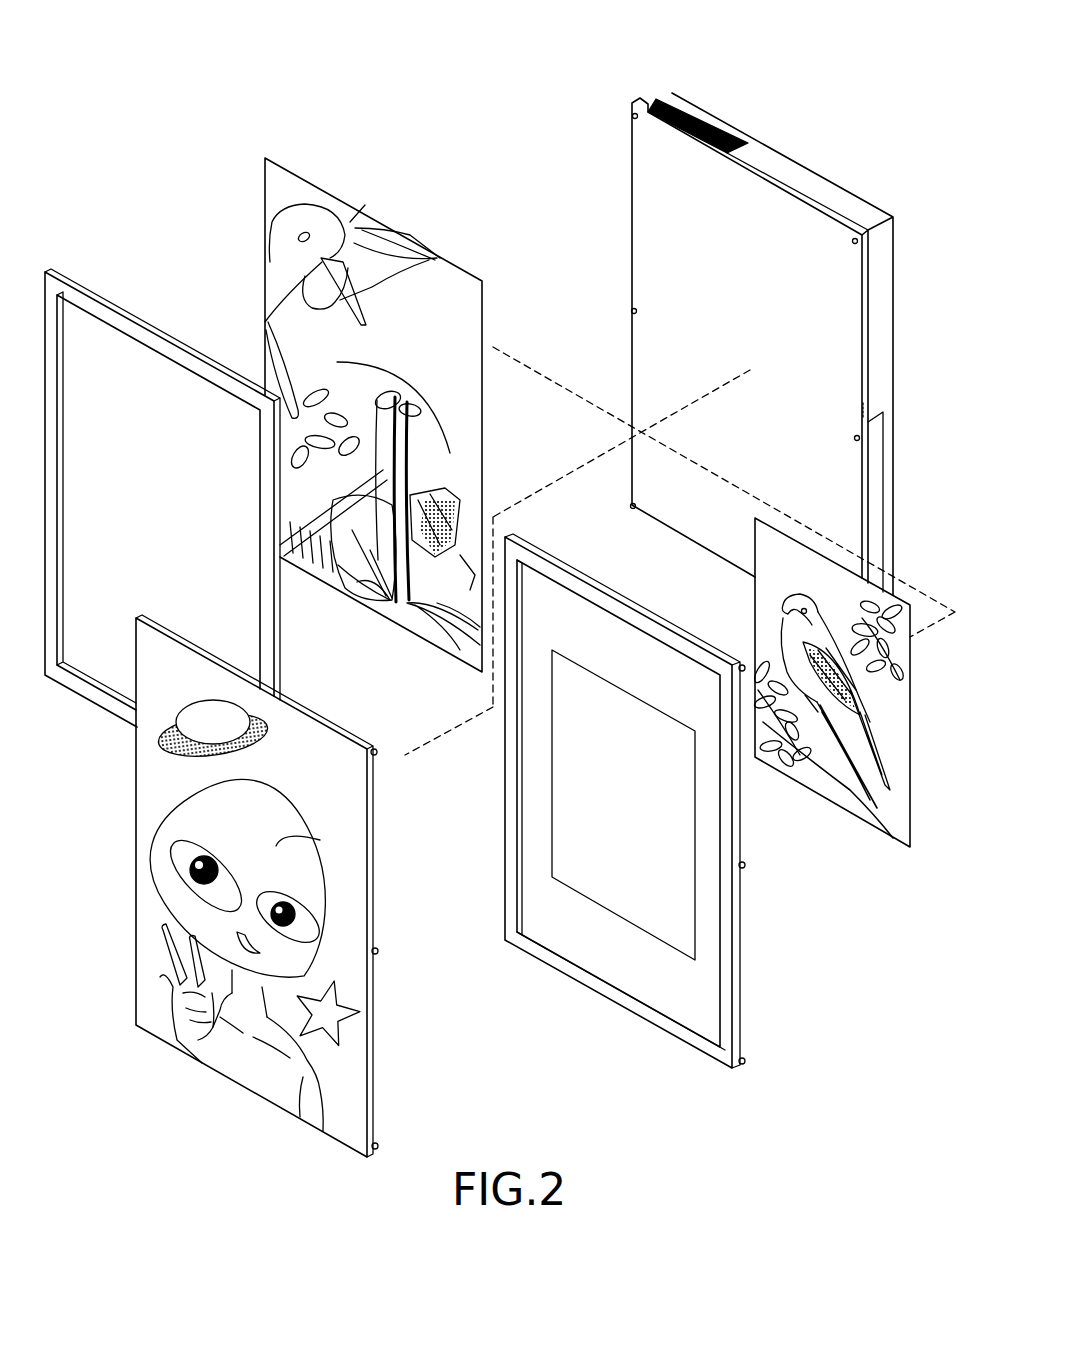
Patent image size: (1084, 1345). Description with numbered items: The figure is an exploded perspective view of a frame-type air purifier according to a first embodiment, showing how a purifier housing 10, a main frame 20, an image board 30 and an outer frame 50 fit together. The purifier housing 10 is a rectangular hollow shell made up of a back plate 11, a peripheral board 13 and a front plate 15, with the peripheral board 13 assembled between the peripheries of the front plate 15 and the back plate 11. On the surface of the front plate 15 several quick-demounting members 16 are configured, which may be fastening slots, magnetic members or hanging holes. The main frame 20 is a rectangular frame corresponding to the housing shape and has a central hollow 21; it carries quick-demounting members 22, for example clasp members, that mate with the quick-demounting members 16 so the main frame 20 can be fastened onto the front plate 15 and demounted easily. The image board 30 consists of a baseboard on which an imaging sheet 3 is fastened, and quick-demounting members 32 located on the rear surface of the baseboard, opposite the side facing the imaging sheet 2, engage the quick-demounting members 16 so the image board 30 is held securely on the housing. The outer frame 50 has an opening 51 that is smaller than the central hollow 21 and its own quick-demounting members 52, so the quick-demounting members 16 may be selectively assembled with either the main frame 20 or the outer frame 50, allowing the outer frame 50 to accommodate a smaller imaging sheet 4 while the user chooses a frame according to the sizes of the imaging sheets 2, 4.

The purifier housing 10 is at (645, 90).
The back plate 11 is at (896, 235).
The peripheral board 13 is at (766, 158).
The front plate 15 is at (648, 198).
The quick-demounting member 16 is at (632, 115).
The imaging sheet 2 is at (285, 195).
The main frame 20 is at (62, 274).
The central hollow 21 is at (167, 377).
The quick-demounting member 22 is at (277, 407).
The imaging sheet 3 is at (318, 745).
The image board 30 is at (393, 1107).
The quick-demounting member 32 is at (375, 748).
The imaging sheet 4 is at (905, 690).
The outer frame 50 is at (735, 968).
The opening 51 is at (685, 895).
The quick-demounting member 52 is at (742, 664).